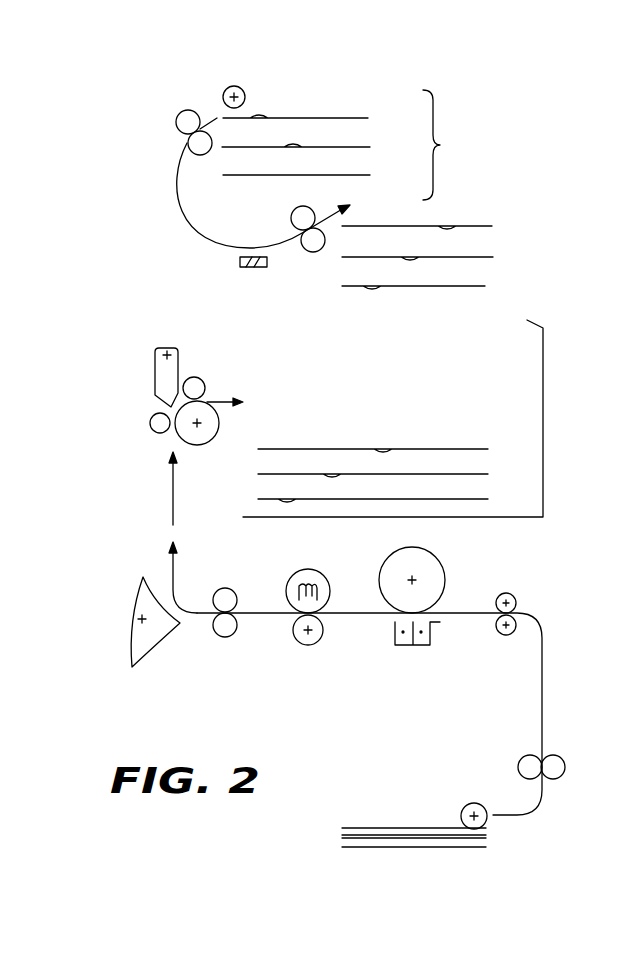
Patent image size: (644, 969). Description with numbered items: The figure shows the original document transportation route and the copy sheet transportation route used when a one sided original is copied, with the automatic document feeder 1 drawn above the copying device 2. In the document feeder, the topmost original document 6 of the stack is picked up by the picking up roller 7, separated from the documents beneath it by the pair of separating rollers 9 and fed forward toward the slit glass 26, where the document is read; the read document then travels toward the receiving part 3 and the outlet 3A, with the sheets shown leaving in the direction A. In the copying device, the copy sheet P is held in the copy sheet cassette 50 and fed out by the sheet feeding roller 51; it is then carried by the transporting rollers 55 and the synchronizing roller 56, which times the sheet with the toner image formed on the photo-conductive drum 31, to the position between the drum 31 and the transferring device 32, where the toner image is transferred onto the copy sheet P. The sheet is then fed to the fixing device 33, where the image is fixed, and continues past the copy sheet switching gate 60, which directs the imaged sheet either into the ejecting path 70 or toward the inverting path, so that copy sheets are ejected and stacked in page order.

The automatic document feeder 1 is at (368, 118).
The copying device 2 is at (370, 147).
The receiving part 3 is at (370, 175).
The receiving outlet 3A is at (204, 383).
The original document 6 is at (442, 145).
The picking up roller 7 is at (222, 90).
The separating rollers 9 is at (175, 126).
The slit glass 26 is at (240, 263).
The photo-conductive drum 31 is at (442, 563).
The transferring device 32 is at (430, 645).
The fixing device 33 is at (327, 580).
The copy sheet cassette 50 is at (433, 848).
The sheet feeding roller 51 is at (466, 804).
The transporting rollers 55 is at (566, 765).
The synchronizing roller 56 is at (518, 600).
The copy sheet switching gate 60 is at (122, 650).
The ejecting path 70 is at (155, 378).
The copy sheet P is at (310, 446).
The direction A is at (236, 404).